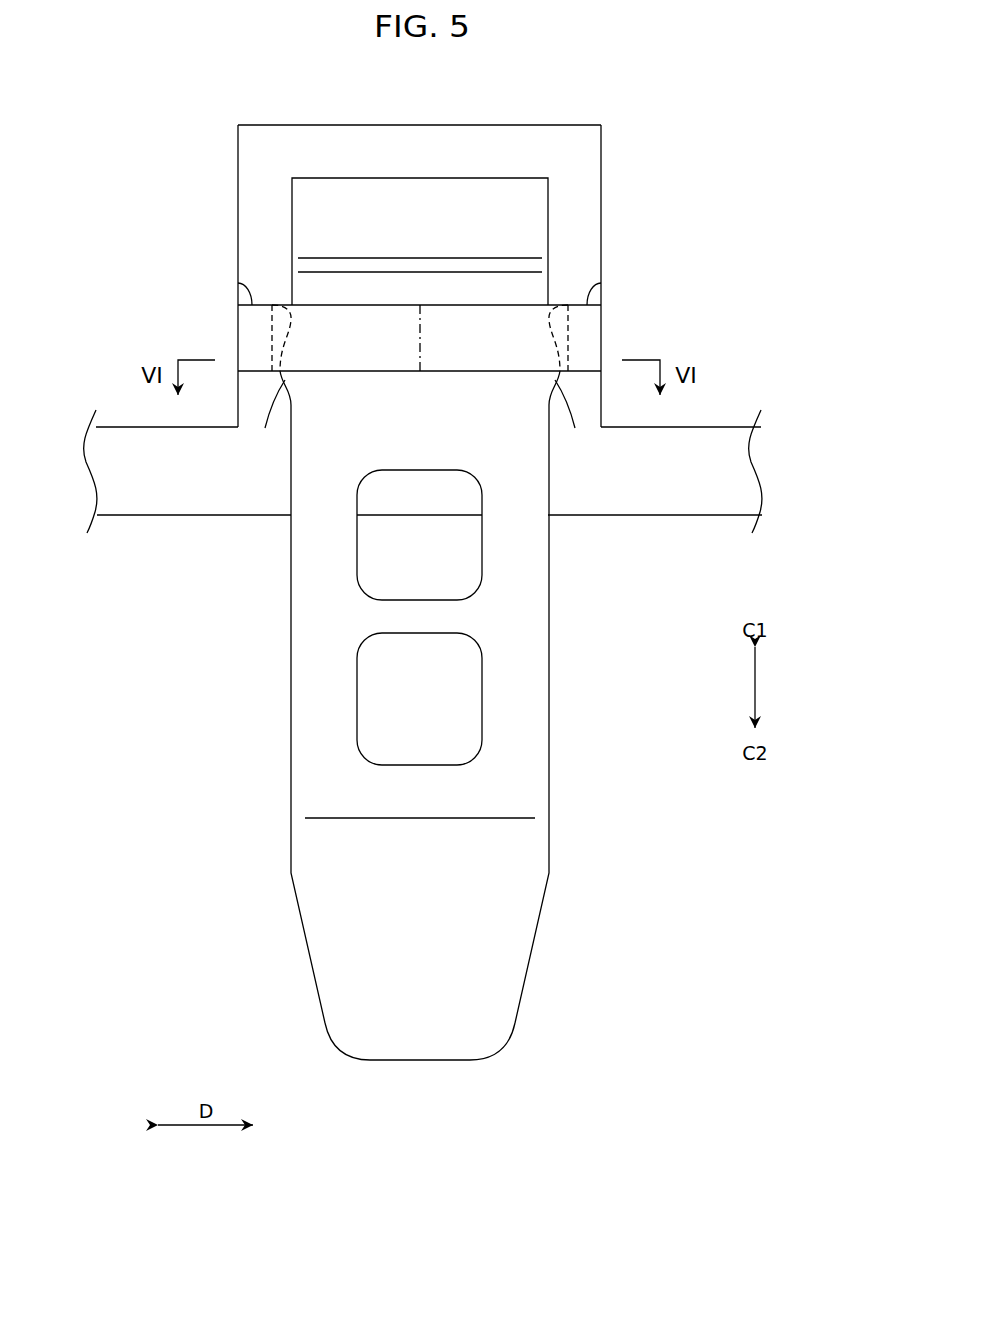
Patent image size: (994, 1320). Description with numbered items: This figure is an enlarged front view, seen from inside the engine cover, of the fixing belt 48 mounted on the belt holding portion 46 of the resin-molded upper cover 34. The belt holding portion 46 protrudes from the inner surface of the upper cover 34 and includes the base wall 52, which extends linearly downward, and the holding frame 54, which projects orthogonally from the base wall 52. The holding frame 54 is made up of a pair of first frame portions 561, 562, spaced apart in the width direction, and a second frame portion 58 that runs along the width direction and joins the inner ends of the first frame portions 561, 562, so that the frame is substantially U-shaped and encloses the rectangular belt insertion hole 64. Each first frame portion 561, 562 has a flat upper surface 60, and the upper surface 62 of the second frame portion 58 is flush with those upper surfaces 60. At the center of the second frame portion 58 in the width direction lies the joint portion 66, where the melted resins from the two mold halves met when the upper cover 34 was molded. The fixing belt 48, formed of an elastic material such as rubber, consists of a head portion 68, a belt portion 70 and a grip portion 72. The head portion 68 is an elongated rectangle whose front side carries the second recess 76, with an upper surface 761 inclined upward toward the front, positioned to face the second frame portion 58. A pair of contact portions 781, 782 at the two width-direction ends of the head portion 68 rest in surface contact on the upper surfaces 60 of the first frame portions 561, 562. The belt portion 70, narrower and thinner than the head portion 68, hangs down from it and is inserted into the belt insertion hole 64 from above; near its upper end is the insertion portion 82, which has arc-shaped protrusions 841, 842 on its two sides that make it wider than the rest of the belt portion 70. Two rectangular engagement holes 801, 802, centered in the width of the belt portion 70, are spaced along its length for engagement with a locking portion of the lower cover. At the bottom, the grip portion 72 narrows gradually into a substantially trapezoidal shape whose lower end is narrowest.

The head portion 68 is at (421, 253).
The contact portion 781 is at (255, 218).
The contact portion 782 is at (582, 217).
The upper surface of the second frame portion 62 is at (347, 305).
The second recess 76 is at (420, 250).
The upper surface of the second recess 761 is at (501, 268).
The upper surface of the first frame portion 60 is at (246, 291).
The belt holding portion 46 is at (434, 365).
The holding frame 54 is at (382, 375).
The second frame portion 58 is at (447, 360).
The first frame portion 561 is at (250, 330).
The first frame portion 562 is at (590, 333).
The insertion portion 82 is at (331, 352).
The belt insertion hole 64 is at (567, 328).
The joint portion 66 is at (420, 330).
The base wall 52 is at (128, 435).
The upper cover 34 is at (714, 421).
The fixing belt 48 is at (399, 741).
The belt portion 70 is at (318, 632).
The grip portion 72 is at (423, 1050).
The protrusion 841 is at (264, 418).
The protrusion 842 is at (573, 418).
The engagement hole 801 is at (459, 570).
The engagement hole 802 is at (459, 712).